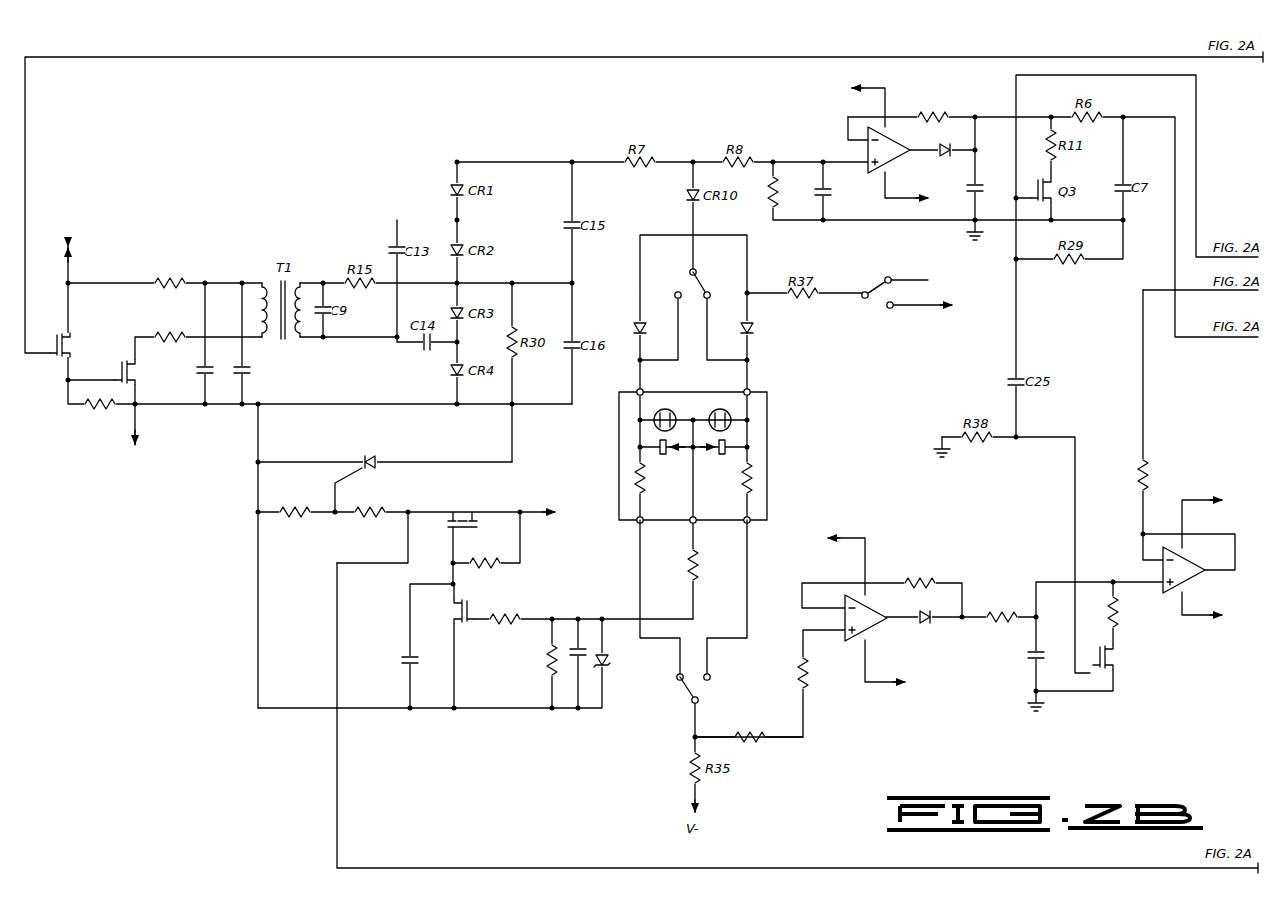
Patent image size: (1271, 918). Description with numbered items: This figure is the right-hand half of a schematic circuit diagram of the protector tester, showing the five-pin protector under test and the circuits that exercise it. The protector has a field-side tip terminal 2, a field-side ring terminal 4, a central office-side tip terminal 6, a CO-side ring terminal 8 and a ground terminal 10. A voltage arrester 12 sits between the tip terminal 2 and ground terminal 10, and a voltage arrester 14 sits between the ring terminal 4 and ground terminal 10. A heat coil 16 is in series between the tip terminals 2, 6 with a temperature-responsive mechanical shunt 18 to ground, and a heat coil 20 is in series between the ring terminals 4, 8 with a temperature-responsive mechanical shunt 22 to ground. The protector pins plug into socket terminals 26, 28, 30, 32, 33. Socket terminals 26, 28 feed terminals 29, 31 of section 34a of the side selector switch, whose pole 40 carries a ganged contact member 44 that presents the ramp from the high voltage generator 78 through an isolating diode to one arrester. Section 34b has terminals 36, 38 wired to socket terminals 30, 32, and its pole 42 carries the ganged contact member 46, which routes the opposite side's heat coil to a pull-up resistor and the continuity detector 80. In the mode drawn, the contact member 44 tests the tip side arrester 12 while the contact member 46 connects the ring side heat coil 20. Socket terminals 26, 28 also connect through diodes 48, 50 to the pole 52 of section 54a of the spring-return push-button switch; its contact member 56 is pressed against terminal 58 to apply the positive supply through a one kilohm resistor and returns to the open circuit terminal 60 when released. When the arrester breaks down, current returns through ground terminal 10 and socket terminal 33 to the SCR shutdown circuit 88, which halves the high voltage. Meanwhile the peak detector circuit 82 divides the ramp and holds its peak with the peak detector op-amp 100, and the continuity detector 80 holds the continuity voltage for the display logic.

The high voltage generator circuit 78 is at (70, 418).
The peak detector circuit 82 is at (859, 160).
The peak detector op-amp 100 is at (887, 143).
The diode 50 is at (636, 324).
The diode 48 is at (752, 323).
The switch section 34a is at (697, 297).
The pole 40 is at (698, 270).
The contact member 44 is at (700, 283).
The terminal 31 is at (676, 294).
The terminal 29 is at (710, 294).
The switch section 54a is at (904, 291).
The pole 52 is at (863, 291).
The contact member 56 is at (879, 279).
The open circuit terminal 60 is at (892, 277).
The terminal 58 is at (892, 309).
The ground terminal 10 is at (696, 493).
The socket terminal 33 is at (696, 493).
The voltage arrester 14 is at (668, 408).
The voltage arrester 12 is at (720, 408).
The temperature-responsive mechanical shunt 22 is at (660, 458).
The temperature-responsive mechanical shunt 18 is at (726, 458).
The heat coil 20 is at (636, 476).
The heat coil 16 is at (752, 474).
The field-side ring terminal 4 is at (609, 409).
The socket terminal 28 is at (637, 396).
The field-side tip terminal 2 is at (781, 381).
The socket terminal 26 is at (751, 390).
The central office-side tip terminal 6 is at (781, 512).
The socket terminal 30 is at (752, 518).
The CO-side ring terminal 8 is at (613, 534).
The socket terminal 32 is at (636, 524).
The switch section 34b is at (688, 697).
The terminal 38 is at (677, 678).
The contact member 46 is at (690, 688).
The terminal 36 is at (710, 676).
The pole 42 is at (710, 713).
The reset trigger circuit 88 is at (447, 730).
The continuity detector 80 is at (1140, 708).